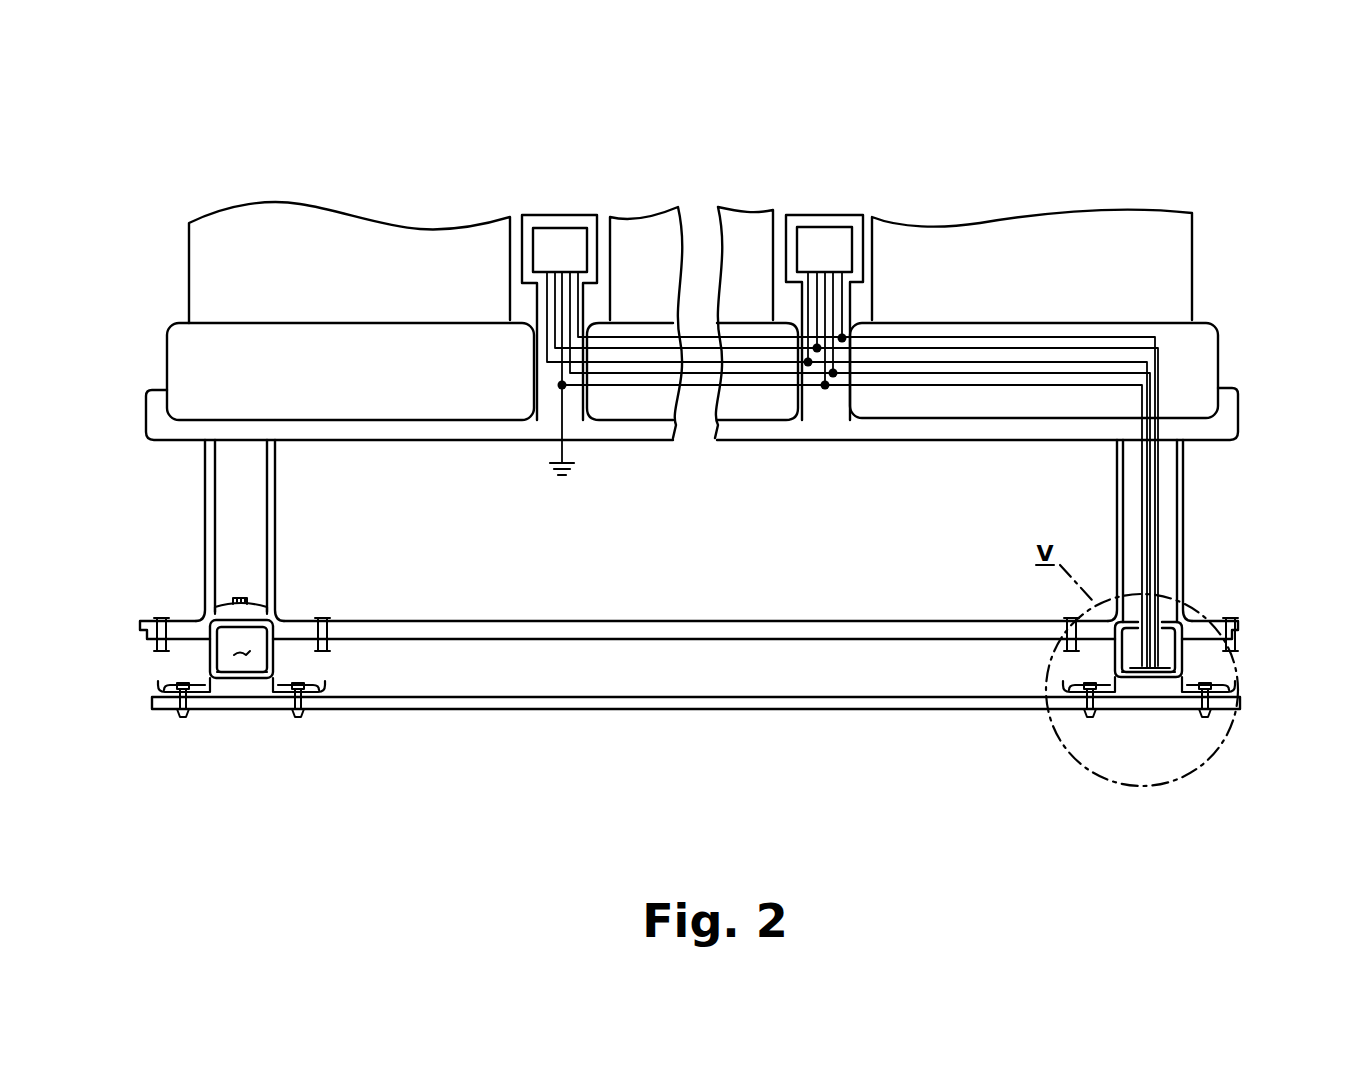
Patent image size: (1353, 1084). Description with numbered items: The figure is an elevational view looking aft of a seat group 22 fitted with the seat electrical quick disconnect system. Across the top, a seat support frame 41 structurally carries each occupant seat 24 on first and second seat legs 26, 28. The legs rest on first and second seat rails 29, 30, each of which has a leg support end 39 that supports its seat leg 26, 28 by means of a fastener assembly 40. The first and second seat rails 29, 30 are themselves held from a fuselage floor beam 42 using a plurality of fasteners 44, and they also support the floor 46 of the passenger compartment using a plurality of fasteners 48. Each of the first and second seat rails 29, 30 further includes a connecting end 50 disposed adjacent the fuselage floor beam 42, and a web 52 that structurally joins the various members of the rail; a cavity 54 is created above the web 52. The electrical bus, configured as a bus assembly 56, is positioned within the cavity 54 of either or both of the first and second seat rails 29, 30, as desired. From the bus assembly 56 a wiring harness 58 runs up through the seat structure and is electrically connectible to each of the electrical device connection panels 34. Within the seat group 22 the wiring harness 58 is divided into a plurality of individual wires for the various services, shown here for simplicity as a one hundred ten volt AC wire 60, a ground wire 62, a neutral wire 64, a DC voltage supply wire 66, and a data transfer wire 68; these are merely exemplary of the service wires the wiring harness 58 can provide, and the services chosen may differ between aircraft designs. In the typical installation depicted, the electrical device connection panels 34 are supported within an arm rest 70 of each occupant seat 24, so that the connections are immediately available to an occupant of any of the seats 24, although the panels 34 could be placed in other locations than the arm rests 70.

The seat group 22 is at (951, 143).
The occupant seat 24 is at (365, 243).
The first seat leg 26 is at (277, 550).
The second seat leg 28 is at (1183, 576).
The first seat rail 29 is at (282, 662).
The second seat rail 30 is at (1106, 660).
The electrical device connection panel 34 is at (558, 245).
The leg support end 39 is at (280, 618).
The fastener assembly 40 is at (236, 622).
The seat support frame 41 is at (157, 418).
The fuselage floor beam 42 is at (886, 706).
The fastener 44 is at (182, 714).
The floor 46 is at (776, 622).
The fastener 48 is at (160, 620).
The connecting end 50 is at (321, 704).
The web 52 is at (265, 690).
The cavity 54 is at (242, 660).
The bus assembly 56 is at (1130, 690).
The wiring harness 58 is at (1163, 501).
The 110 volt AC wire 60 is at (943, 374).
The ground wire 62 is at (997, 386).
The neutral wire 64 is at (1083, 361).
The DC voltage supply wire 66 is at (1062, 347).
The data transfer wire 68 is at (1003, 335).
The arm rest 70 is at (538, 214).